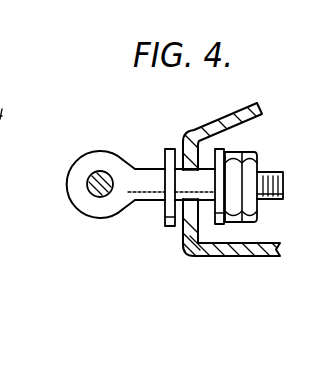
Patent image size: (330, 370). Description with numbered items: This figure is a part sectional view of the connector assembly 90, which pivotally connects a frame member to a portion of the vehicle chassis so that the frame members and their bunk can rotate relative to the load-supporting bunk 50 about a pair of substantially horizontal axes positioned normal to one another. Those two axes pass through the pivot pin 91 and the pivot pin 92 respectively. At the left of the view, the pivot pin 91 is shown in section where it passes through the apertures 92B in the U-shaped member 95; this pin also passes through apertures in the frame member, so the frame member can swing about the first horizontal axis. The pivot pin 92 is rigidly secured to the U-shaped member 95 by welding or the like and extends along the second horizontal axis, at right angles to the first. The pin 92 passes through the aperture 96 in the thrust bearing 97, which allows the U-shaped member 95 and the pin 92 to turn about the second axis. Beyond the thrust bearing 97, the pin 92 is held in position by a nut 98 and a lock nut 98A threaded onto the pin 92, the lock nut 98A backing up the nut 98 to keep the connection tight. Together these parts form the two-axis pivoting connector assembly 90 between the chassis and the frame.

The connector assembly 90 is at (206, 285).
The pivot pin 91 is at (90, 183).
The apertures 92B is at (102, 213).
The U-shaped member 95 is at (147, 169).
The aperture 96 is at (196, 162).
The thrust bearing 97 is at (177, 148).
The nut 98 is at (230, 150).
The lock nut 98A is at (256, 152).
The pivot pin 92 is at (274, 200).
The load-supporting bunk 50 is at (259, 105).